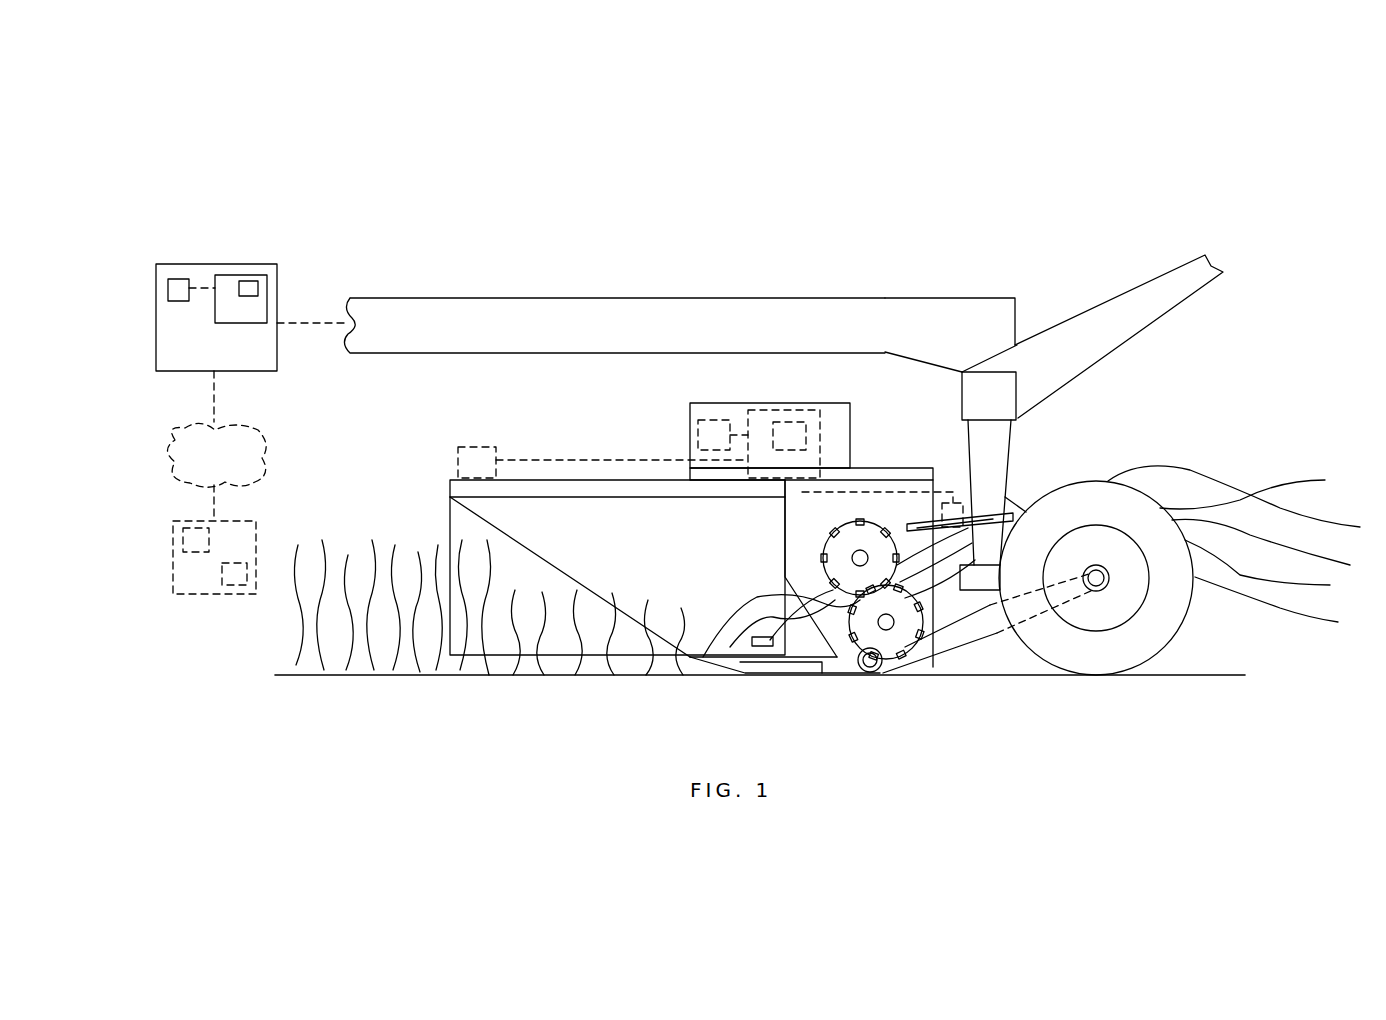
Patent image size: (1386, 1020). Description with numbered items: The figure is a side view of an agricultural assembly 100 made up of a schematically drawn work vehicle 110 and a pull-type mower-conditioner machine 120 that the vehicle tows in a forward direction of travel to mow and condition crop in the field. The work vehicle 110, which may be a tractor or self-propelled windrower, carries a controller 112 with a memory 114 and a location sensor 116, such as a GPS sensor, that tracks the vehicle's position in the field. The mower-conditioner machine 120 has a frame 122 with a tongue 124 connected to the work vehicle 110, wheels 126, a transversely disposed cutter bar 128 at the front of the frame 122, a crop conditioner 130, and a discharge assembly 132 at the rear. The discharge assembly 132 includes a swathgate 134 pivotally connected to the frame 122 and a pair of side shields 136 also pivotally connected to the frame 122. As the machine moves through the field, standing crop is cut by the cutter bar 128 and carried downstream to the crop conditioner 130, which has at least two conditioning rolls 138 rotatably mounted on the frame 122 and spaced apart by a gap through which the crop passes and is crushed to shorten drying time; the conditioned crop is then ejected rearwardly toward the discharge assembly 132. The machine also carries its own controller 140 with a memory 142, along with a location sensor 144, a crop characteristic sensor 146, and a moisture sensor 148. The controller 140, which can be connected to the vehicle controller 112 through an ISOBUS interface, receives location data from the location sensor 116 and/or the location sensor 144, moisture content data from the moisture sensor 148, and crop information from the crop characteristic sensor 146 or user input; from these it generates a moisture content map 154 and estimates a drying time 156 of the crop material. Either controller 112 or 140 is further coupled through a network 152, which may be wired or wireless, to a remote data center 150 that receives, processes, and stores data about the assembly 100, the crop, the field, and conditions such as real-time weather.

The agricultural assembly 100 is at (746, 225).
The work vehicle 110 is at (277, 278).
The controller 112 is at (233, 275).
The memory 114 is at (250, 281).
The location sensor 116 is at (185, 279).
The pull-type mower-conditioner machine 120 is at (842, 287).
The frame 122 is at (965, 313).
The tongue 124 is at (556, 298).
The wheels 126 is at (1173, 627).
The cutter bar 128 is at (745, 681).
The crop conditioner 130 is at (863, 513).
The discharge assembly 132 is at (982, 493).
The swathgate 134 is at (972, 517).
The side shields 136 is at (1018, 503).
The conditioning rolls 138 is at (828, 545).
The controller 140 is at (783, 410).
The memory 142 is at (795, 422).
The location sensor 144 is at (715, 420).
The crop characteristic sensor 146 is at (470, 447).
The moisture sensor 148 is at (940, 512).
The data center 150 is at (256, 528).
The network 152 is at (265, 438).
The moisture content map 154 is at (197, 552).
The drying time 156 is at (236, 585).